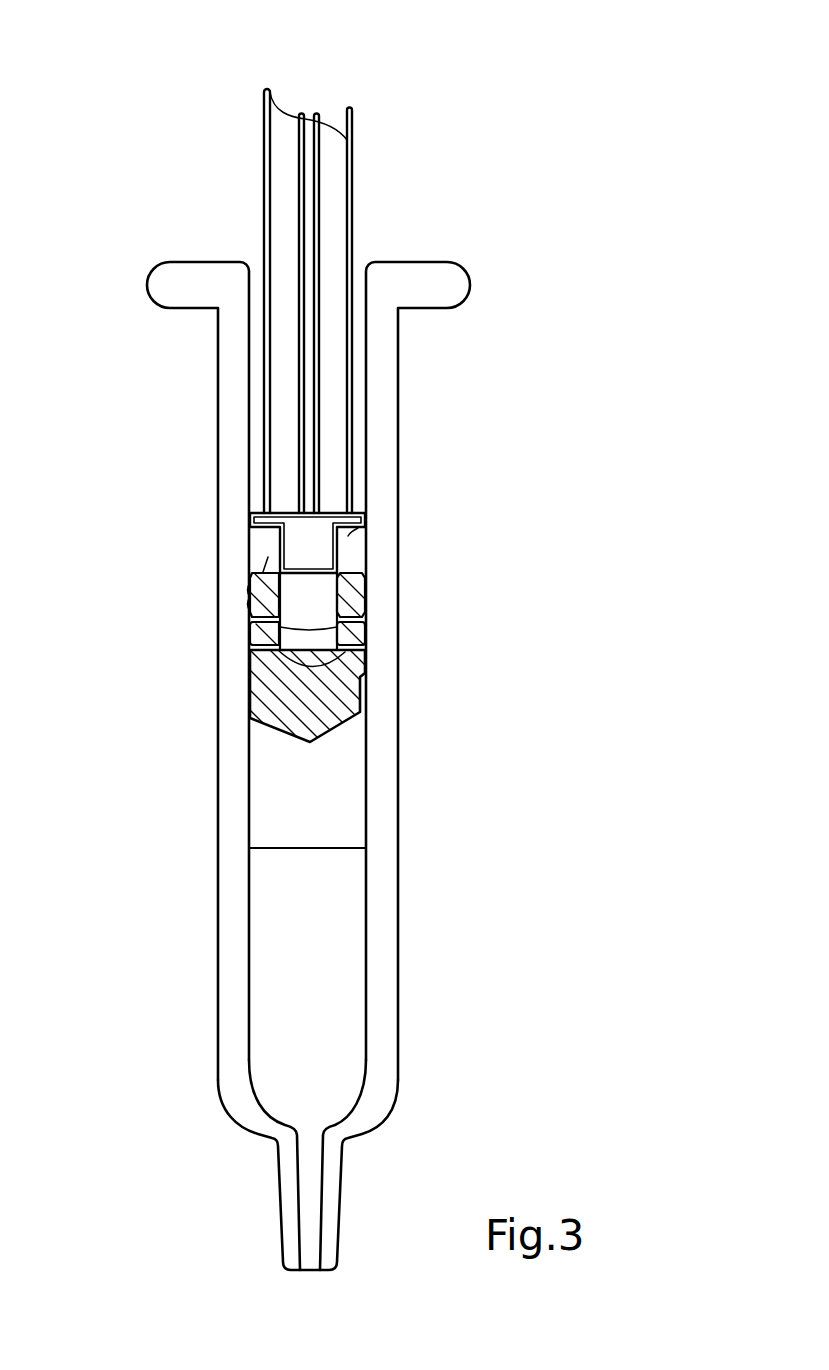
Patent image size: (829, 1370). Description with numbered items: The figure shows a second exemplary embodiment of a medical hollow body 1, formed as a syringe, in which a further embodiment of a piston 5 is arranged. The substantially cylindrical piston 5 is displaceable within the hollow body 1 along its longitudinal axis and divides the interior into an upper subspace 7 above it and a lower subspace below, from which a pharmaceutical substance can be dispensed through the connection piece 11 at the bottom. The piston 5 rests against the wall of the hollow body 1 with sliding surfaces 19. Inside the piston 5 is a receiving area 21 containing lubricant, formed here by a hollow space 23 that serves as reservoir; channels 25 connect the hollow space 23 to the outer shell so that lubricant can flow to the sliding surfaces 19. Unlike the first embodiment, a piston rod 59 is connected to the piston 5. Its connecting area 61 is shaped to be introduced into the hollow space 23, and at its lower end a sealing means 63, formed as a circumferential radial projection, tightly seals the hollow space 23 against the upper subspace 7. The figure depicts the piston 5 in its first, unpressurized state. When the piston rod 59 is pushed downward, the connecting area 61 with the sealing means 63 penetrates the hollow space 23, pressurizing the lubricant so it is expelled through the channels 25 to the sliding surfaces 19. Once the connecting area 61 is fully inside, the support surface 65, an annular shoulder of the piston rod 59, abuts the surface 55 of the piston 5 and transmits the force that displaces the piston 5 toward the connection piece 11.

The medical hollow body 1 is at (508, 107).
The piston 5 is at (335, 700).
The upper subspace 7 is at (262, 544).
The connection piece 11 is at (330, 1203).
The sliding surfaces 19 is at (250, 587).
The receiving area 21 is at (347, 591).
The hollow space 23 is at (320, 607).
The channels 25 is at (365, 660).
The surface of the piston 55 is at (263, 571).
The piston rod 59 is at (332, 185).
The connecting area 61 is at (340, 567).
The sealing means 63 is at (341, 549).
The support surface 65 is at (366, 537).